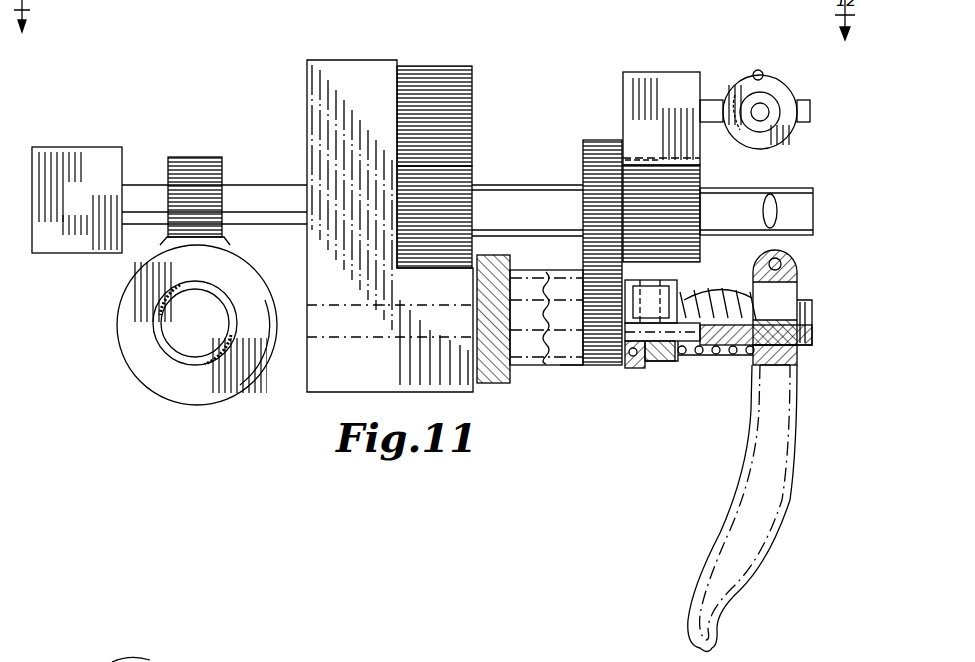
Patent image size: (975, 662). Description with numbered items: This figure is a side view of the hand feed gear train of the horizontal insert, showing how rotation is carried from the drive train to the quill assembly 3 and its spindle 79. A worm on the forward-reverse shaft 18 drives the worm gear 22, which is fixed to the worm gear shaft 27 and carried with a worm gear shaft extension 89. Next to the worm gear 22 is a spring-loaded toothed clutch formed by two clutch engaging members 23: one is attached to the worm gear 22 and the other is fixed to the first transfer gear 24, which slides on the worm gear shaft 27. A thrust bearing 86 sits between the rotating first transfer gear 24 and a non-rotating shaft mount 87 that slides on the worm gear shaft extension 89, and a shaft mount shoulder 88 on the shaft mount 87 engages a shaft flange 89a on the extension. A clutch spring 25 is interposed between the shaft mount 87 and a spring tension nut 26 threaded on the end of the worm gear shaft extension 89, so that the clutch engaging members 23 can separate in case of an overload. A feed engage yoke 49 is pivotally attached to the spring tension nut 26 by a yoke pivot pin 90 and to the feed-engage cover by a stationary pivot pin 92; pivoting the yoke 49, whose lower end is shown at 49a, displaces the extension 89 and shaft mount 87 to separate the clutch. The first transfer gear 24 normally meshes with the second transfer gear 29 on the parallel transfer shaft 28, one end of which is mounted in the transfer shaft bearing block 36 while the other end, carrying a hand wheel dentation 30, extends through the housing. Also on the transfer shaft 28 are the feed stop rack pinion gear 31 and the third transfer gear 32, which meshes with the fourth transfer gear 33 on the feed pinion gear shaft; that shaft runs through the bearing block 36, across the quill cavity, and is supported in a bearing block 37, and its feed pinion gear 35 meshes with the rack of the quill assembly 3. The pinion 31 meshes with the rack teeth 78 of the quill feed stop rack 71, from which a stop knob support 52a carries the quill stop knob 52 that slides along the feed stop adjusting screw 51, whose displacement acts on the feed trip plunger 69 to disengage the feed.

The quill assembly 3 is at (180, 277).
The forward-reverse shaft 18 is at (494, 654).
The worm gear 22 is at (505, 258).
The clutch engaging members 23 is at (534, 368).
The first transfer gear 24 is at (600, 367).
The clutch spring 25 is at (756, 211).
The spring tension nut 26 is at (790, 302).
The worm gear shaft 27 is at (728, 348).
The transfer shaft 28 is at (498, 200).
The second transfer gear 29 is at (592, 158).
The hand wheel dentation 30 is at (778, 205).
The feed stop rack pinion gear 31 is at (700, 175).
The third transfer gear 32 is at (473, 178).
The fourth transfer gear 33 is at (473, 92).
The feed pinion gear 35 is at (203, 162).
The transfer shaft bearing block 36 is at (422, 332).
The bearing block 37 is at (90, 204).
The feed engage yoke 49 is at (775, 446).
The lever tip 49a is at (702, 650).
The feed stop adjusting screw 51 is at (775, 110).
The quill stop knob 52 is at (780, 92).
The stop knob support 52a is at (706, 100).
The feed trip plunger 69 is at (757, 70).
The quill feed stop rack 71 is at (650, 75).
The rack teeth 78 is at (650, 162).
The spindle 79 is at (210, 334).
The thrust bearing 86 is at (636, 360).
The shaft mount 87 is at (660, 362).
The shaft mount shoulder 88 is at (706, 356).
The worm gear shaft extension 89 is at (808, 318).
The shaft flange 89a is at (672, 282).
The yoke pivot pin 90 is at (800, 340).
The stationary pivot pin 92 is at (752, 272).